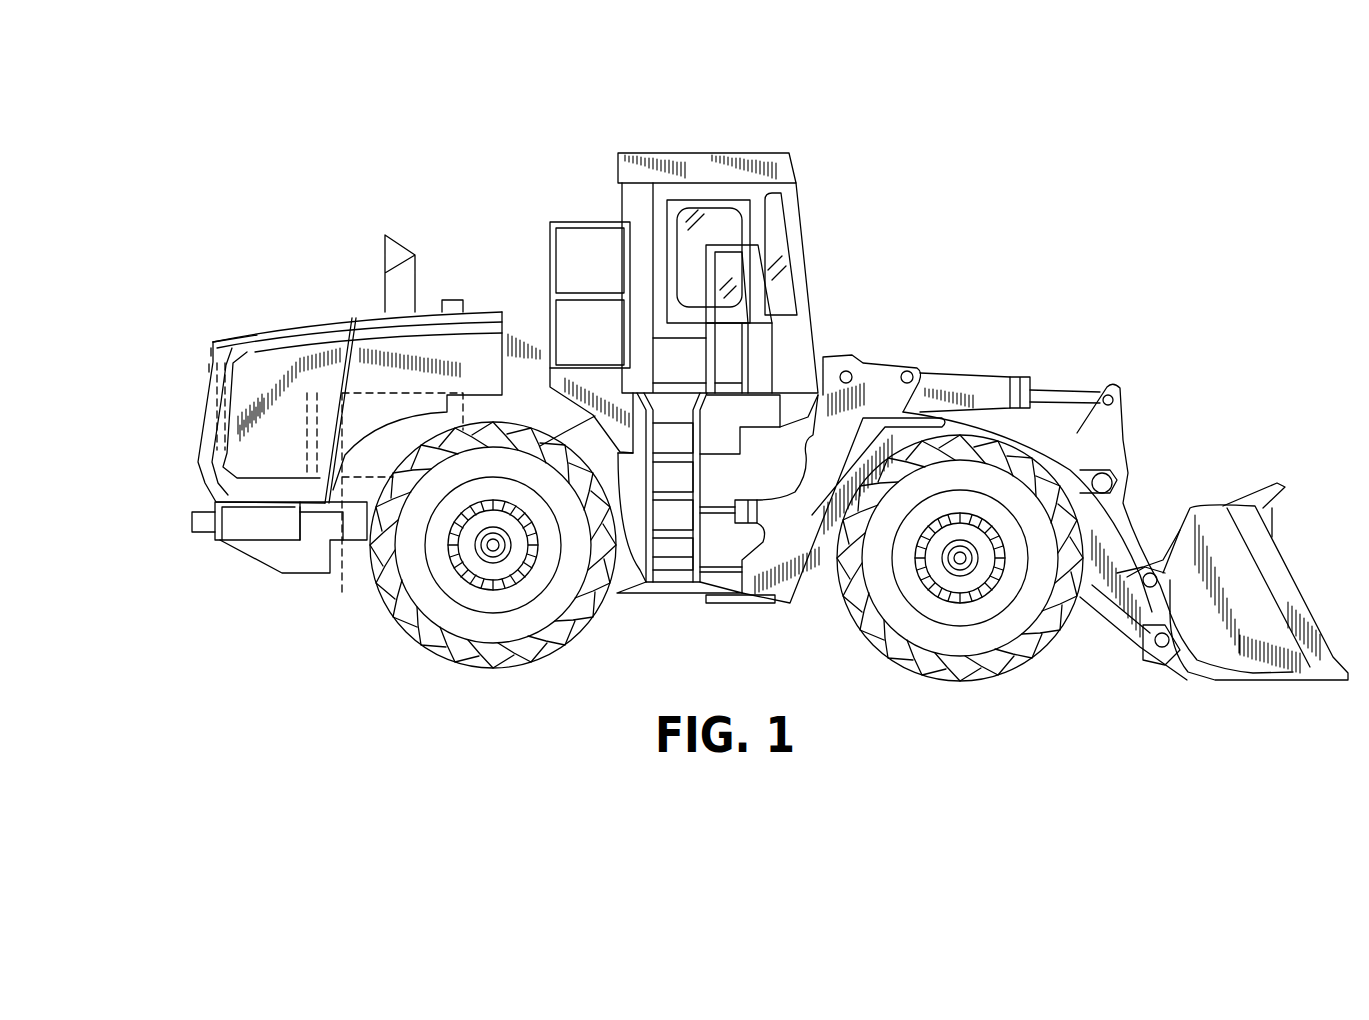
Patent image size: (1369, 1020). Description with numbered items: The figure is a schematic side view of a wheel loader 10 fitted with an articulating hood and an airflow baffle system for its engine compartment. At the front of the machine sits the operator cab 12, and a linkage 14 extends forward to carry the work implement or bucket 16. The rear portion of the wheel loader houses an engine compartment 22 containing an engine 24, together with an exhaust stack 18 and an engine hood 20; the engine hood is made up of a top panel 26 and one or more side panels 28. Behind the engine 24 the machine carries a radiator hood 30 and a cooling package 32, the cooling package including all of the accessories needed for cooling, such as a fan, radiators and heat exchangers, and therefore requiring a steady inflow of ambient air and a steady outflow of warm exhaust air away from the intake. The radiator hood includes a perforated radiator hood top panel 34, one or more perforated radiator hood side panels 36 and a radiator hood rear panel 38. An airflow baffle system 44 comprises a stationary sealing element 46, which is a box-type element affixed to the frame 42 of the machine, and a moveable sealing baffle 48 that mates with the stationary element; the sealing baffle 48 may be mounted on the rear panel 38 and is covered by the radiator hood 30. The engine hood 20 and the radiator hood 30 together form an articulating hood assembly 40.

The wheel loader 10 is at (450, 182).
The operator cab 12 is at (796, 178).
The linkage 14 is at (997, 353).
The bucket 16 is at (1280, 518).
The exhaust stack 18 is at (385, 250).
The engine hood 20 is at (510, 312).
The engine compartment 22 is at (533, 310).
The engine 24 is at (347, 562).
The top panel 26 is at (438, 298).
The side panel 28 is at (545, 389).
The radiator hood 30 is at (257, 333).
The cooling package 32 is at (273, 514).
The perforated radiator hood top panel 34 is at (235, 338).
The perforated radiator hood side panel 36 is at (291, 469).
The radiator hood rear panel 38 is at (205, 402).
The articulating hood assembly 40 is at (171, 478).
The frame 42 is at (233, 548).
The airflow baffle system 44 is at (166, 346).
The stationary sealing element 46 is at (200, 447).
The sealing baffle 48 is at (205, 420).